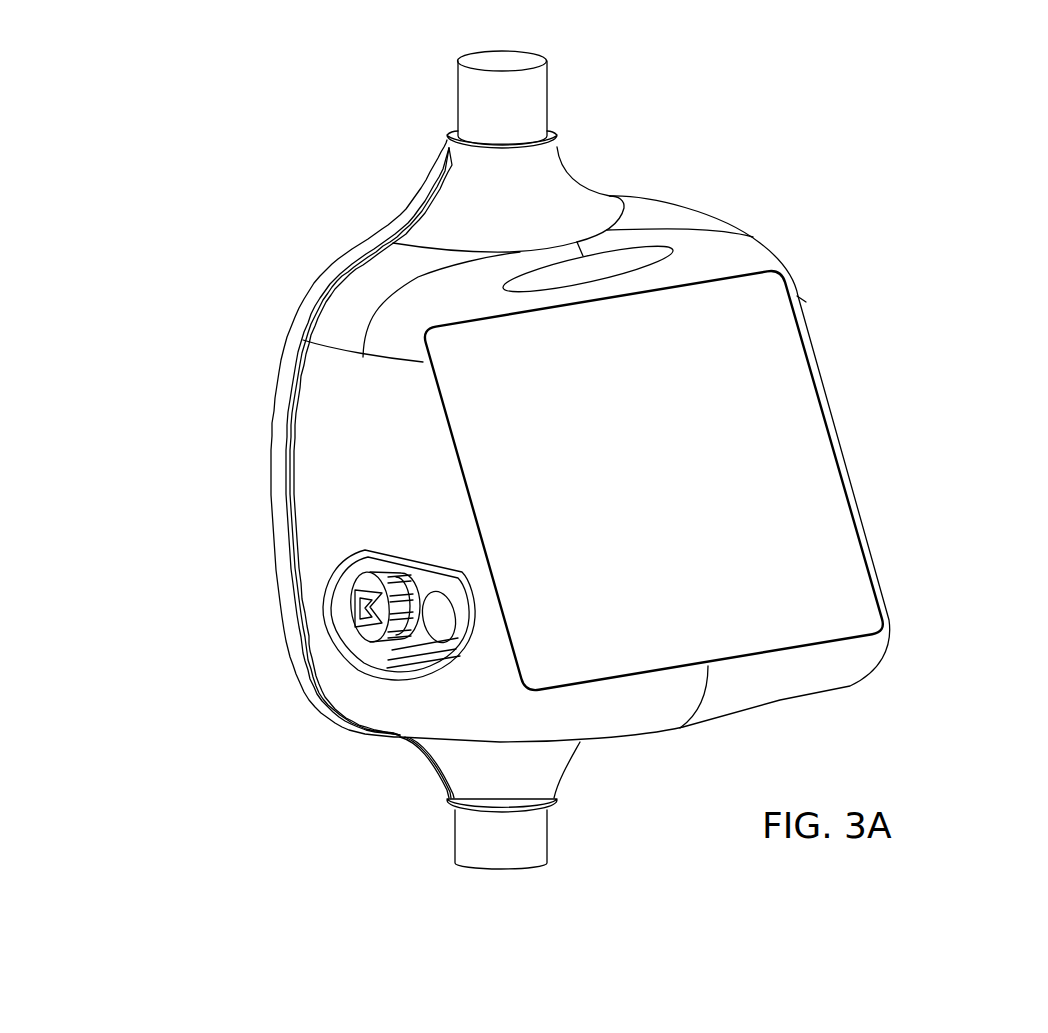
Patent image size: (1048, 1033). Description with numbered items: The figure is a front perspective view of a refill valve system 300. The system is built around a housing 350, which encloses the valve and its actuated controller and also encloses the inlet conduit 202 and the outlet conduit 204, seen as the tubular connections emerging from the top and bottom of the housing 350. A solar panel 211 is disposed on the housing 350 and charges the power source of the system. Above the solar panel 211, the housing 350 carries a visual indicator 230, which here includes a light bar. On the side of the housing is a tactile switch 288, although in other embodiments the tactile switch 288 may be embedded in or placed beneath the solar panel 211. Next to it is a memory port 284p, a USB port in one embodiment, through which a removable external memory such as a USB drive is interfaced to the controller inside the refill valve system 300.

The refill valve system 300 is at (268, 147).
The inlet conduit 202 is at (530, 105).
The outlet conduit 204 is at (533, 838).
The solar panel 211 is at (780, 424).
The visual indicator 230 is at (640, 254).
The housing 350 is at (888, 650).
The memory port 284p is at (360, 620).
The tactile switch 288 is at (438, 632).